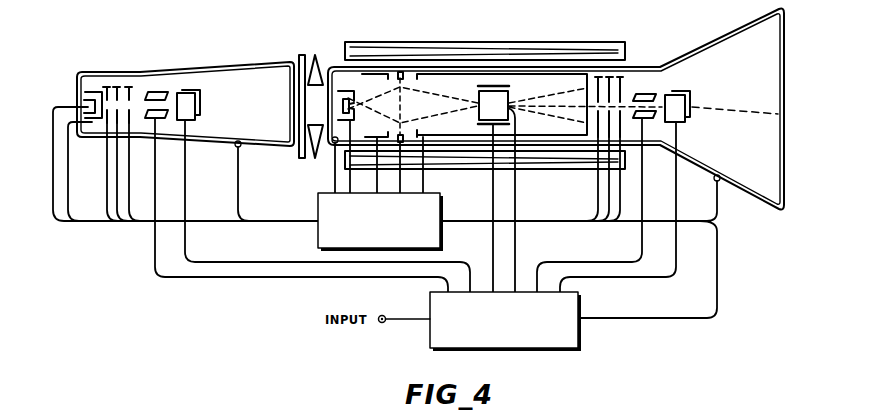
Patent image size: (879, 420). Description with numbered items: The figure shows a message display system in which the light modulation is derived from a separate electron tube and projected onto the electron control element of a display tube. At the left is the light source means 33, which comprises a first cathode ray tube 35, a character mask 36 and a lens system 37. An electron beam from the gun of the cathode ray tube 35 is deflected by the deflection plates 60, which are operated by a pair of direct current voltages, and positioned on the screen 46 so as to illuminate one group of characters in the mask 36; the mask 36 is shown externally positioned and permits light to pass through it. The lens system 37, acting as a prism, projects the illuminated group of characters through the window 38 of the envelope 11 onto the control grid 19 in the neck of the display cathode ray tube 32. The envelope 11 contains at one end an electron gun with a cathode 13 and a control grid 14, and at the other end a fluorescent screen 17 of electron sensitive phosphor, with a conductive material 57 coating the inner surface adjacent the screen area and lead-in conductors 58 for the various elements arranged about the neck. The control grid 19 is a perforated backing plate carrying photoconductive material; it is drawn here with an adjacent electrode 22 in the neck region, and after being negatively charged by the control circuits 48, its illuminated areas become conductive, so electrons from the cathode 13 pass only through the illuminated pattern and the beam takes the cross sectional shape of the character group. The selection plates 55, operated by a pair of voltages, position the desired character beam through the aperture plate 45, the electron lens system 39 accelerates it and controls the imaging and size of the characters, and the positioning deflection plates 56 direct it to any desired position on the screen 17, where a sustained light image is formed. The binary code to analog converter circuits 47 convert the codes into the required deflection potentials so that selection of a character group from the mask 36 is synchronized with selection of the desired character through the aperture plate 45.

The envelope 11 is at (643, 67).
The cathode 13 is at (338, 97).
The control grid 14 is at (355, 93).
The fluorescent screen 17 is at (775, 70).
The control grid 19 is at (401, 105).
The apertured electrode plates 22 is at (388, 74).
The cathode ray tube 32 is at (563, 202).
The light source means 33 is at (226, 167).
The cathode ray tube 35 is at (102, 72).
The mask 36 is at (298, 60).
The lens system 37 is at (317, 54).
The window 38 is at (314, 132).
The electron lens system 39 is at (623, 84).
The aperture plate 45 is at (586, 107).
The screen 46 is at (288, 143).
The binary code to analog converter circuits 47 is at (580, 312).
The control circuits 48 is at (442, 234).
The selection plates 55 is at (509, 95).
The positioning deflection plates 56 is at (666, 90).
The conductive material 57 is at (749, 175).
The lead-in conductors 58 is at (331, 150).
The deflection plates 60 is at (172, 92).